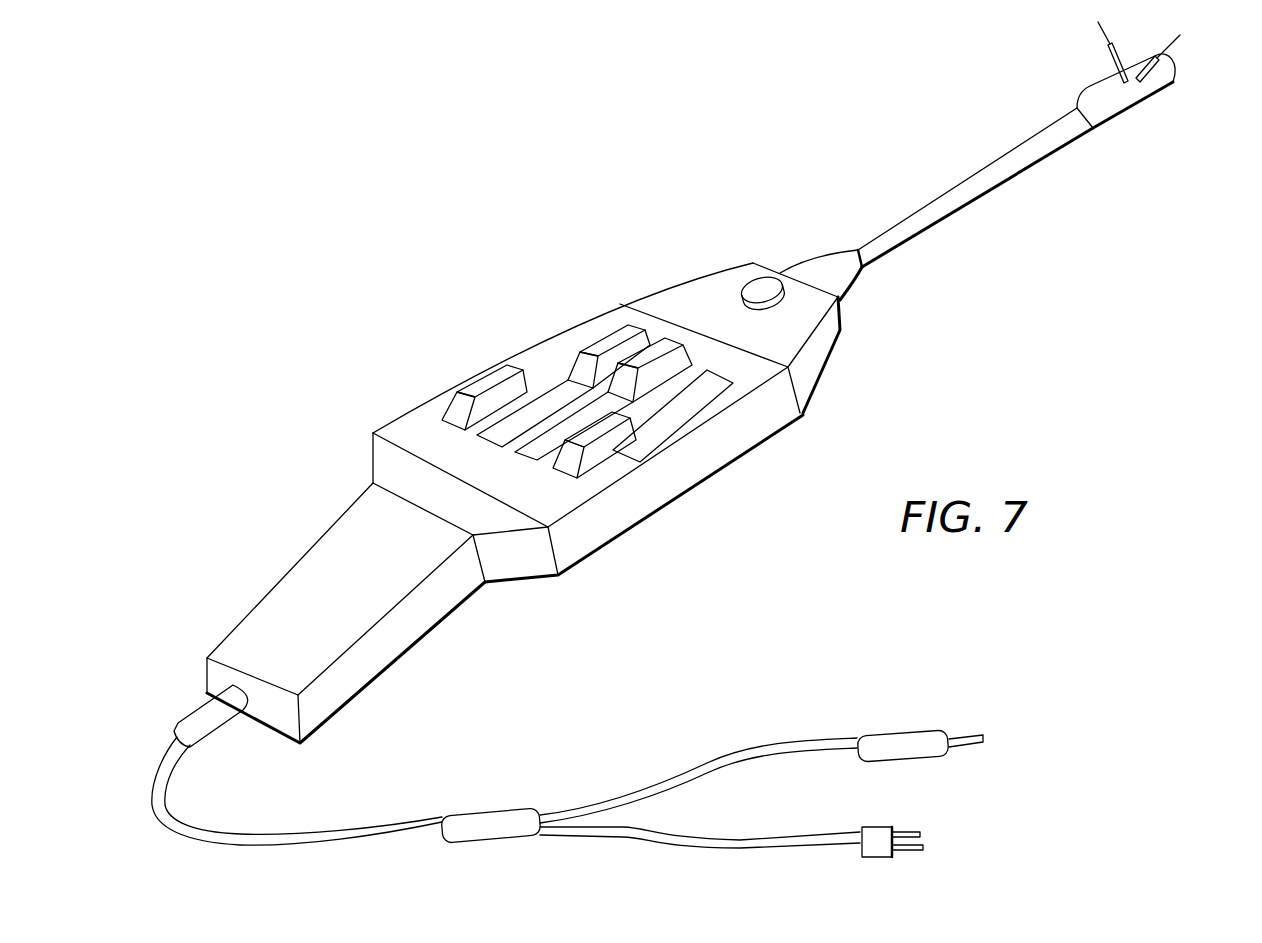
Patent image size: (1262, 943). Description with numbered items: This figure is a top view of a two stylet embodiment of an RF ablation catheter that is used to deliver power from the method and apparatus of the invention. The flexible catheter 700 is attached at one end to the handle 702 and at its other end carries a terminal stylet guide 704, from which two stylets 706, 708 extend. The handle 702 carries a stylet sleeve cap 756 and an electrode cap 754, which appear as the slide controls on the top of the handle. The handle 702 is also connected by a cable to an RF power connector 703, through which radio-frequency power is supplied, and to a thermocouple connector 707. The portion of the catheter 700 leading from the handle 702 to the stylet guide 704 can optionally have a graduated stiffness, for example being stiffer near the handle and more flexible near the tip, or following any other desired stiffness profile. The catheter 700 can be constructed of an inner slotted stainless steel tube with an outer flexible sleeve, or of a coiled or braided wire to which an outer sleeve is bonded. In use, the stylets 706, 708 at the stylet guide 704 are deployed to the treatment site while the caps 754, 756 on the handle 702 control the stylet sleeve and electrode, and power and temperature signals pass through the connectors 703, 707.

The flexible catheter 700 is at (973, 195).
The handle 702 is at (488, 268).
The RF power connector 703 is at (905, 730).
The terminal stylet guide 704 is at (1133, 110).
The stylet 706 is at (1110, 58).
The thermocouple connector 707 is at (880, 827).
The stylet 708 is at (1168, 76).
The electrode cap 754 is at (650, 353).
The stylet sleeve cap 756 is at (600, 430).